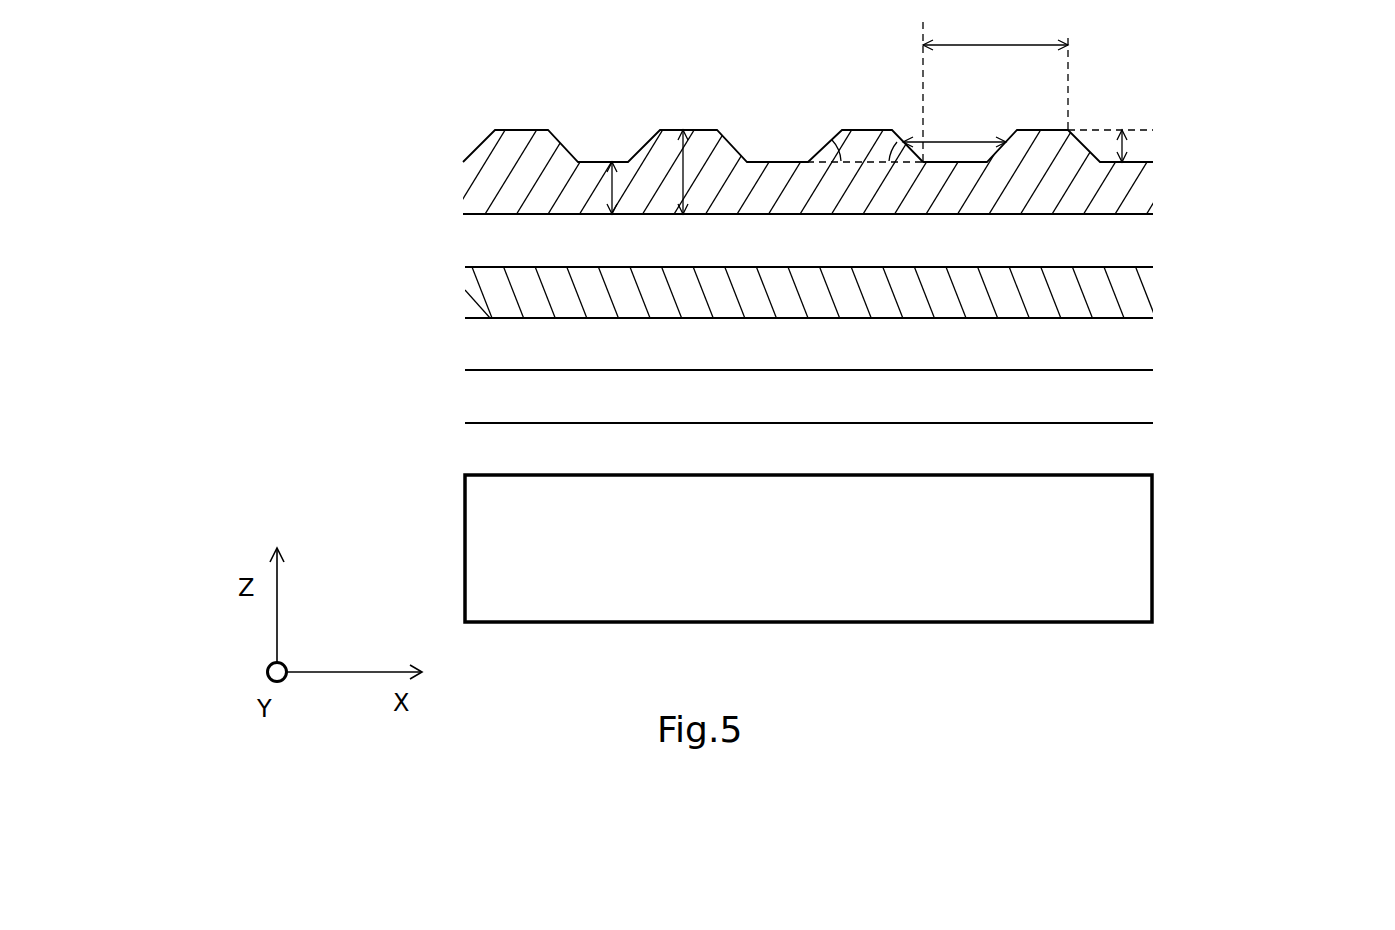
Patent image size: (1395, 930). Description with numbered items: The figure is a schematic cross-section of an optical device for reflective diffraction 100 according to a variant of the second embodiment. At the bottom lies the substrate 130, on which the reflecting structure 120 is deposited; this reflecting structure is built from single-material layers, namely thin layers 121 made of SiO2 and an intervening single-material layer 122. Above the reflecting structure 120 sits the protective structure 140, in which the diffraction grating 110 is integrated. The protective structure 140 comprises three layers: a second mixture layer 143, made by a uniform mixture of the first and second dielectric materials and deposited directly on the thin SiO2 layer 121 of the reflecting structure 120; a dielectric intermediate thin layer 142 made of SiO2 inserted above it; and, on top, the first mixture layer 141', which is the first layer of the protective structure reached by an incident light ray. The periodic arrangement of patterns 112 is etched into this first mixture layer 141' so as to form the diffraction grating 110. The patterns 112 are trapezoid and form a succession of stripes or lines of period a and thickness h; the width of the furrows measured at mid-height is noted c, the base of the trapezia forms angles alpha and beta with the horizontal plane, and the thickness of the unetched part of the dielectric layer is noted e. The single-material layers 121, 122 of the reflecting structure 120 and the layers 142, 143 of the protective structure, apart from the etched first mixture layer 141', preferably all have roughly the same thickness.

The optical device for reflective diffraction 100 is at (1163, 683).
The diffraction grating 110 is at (832, 118).
The periodic arrangement of patterns 112 is at (1052, 138).
The reflecting structure 120 is at (783, 340).
The thin layer made of SiO2 121 is at (463, 342).
The single-material layer 122 is at (463, 395).
The substrate 130 is at (1142, 520).
The protective structure 140 is at (1203, 162).
The first mixture layer 141' is at (388, 169).
The dielectric intermediate thin layer 142 is at (473, 238).
The second mixture layer 143 is at (473, 287).